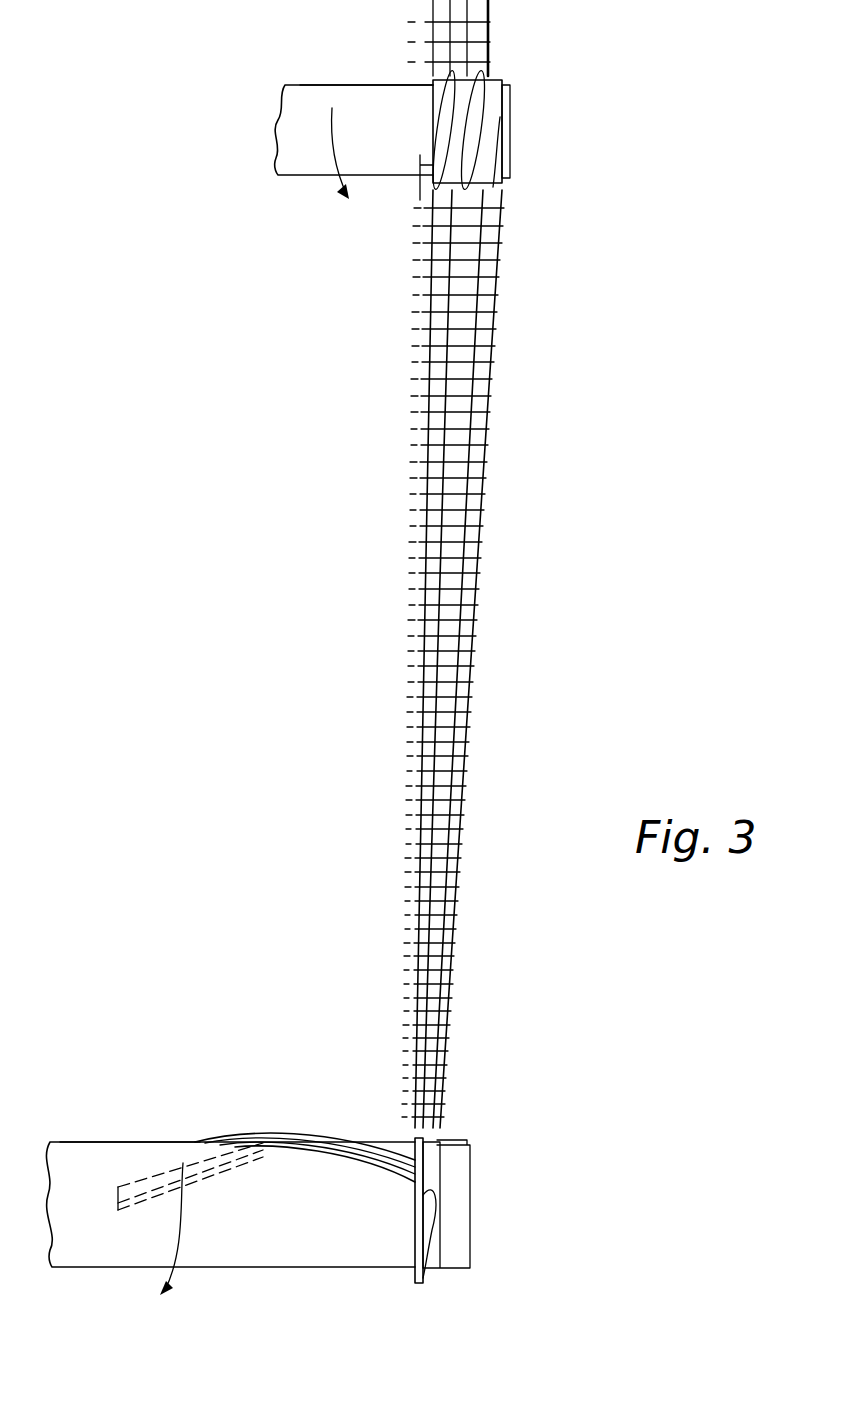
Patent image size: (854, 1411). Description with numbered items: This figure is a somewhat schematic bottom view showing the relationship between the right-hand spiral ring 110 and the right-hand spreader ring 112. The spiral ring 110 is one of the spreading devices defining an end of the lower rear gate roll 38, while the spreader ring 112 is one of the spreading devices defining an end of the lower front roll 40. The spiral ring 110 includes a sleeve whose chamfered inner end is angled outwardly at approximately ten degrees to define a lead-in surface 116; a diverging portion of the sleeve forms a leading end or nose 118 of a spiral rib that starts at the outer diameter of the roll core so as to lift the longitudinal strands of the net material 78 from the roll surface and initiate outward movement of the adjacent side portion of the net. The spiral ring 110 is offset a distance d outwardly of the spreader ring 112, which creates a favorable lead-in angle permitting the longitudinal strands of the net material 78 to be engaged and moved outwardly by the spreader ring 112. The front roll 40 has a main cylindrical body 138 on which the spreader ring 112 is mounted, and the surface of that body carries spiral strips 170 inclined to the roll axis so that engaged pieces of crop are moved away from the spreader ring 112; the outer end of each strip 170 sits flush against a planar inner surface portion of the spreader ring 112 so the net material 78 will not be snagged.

The net material 78 is at (433, 14).
The lead-in surface 116 is at (357, 84).
The lower rear gate roll 38 is at (302, 174).
The distance d is at (417, 175).
The nose 118 is at (483, 98).
The spiral ring 110 is at (508, 116).
The main cylindrical body 138 is at (90, 1142).
The spiral strips 170 is at (365, 1166).
The lower front roll 40 is at (300, 1265).
The spreader ring 112 is at (433, 1278).